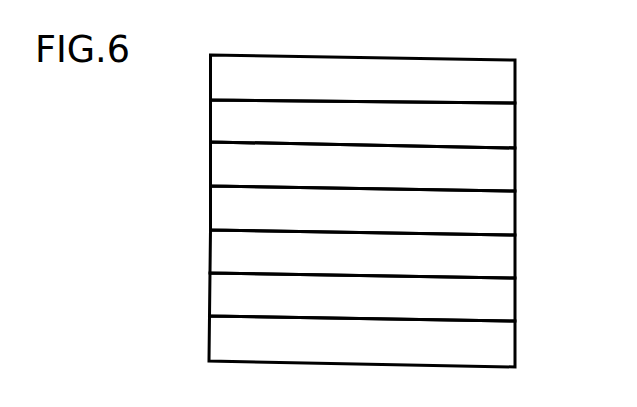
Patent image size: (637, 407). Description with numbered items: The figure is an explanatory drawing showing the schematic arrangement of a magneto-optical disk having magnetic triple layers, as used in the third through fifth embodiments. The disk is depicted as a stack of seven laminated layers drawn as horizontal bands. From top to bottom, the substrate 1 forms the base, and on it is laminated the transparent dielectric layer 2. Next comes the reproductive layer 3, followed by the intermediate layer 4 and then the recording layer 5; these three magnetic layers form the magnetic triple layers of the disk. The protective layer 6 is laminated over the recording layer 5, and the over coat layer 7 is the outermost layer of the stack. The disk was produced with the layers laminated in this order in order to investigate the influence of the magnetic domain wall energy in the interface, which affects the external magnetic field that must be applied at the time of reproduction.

The substrate 1 is at (507, 82).
The transparent dielectric layer 2 is at (507, 131).
The reproductive layer 3 is at (507, 174).
The intermediate layer 4 is at (507, 217).
The recording layer 5 is at (505, 261).
The protective layer 6 is at (505, 298).
The over coat layer 7 is at (503, 345).